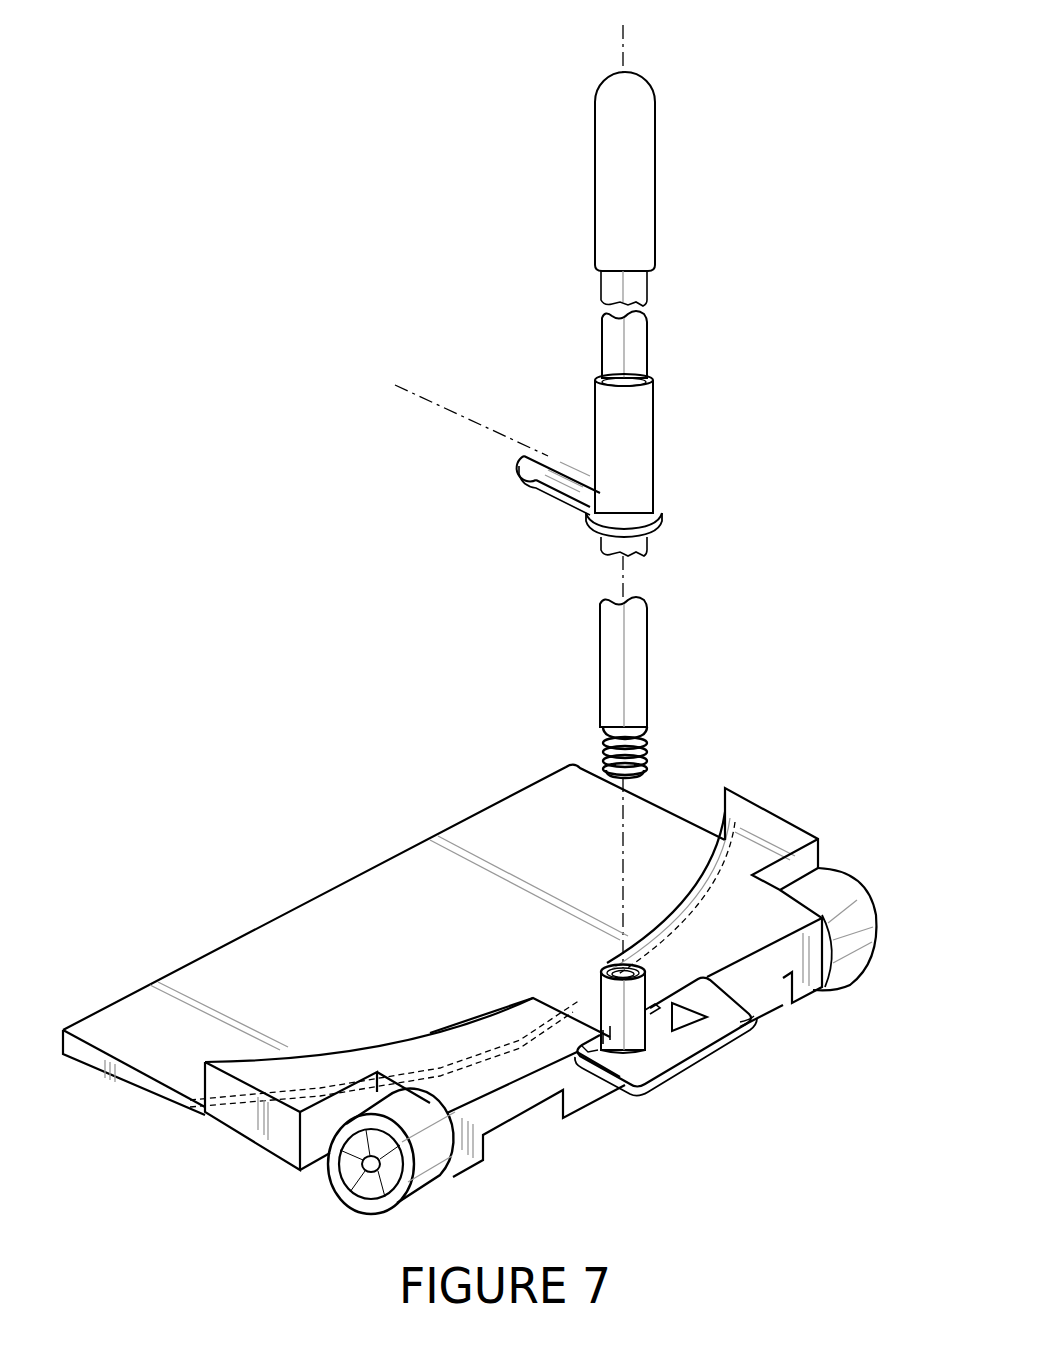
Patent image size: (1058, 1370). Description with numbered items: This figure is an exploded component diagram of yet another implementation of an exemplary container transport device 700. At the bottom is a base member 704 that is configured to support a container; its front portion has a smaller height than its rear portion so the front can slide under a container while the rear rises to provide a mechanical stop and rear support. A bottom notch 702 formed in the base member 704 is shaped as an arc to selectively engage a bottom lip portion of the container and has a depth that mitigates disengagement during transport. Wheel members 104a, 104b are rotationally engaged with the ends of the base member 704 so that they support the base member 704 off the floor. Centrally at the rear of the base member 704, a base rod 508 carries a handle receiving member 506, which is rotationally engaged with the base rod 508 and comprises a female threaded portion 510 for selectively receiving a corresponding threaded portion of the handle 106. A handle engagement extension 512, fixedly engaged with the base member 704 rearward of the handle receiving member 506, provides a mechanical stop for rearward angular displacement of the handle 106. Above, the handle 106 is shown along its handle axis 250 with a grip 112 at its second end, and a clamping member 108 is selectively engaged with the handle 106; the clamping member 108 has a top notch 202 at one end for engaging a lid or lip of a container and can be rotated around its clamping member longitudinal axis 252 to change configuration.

The container transport device 700 is at (682, 70).
The grip 112 is at (640, 190).
The handle 106 is at (638, 352).
The clamping member 108 is at (562, 450).
The clamping member longitudinal axis 252 is at (492, 442).
The top notch 202 is at (535, 495).
The handle axis 250 is at (635, 810).
The base member 704 is at (395, 848).
The bottom notch 702 is at (175, 1115).
The wheel member 104a is at (428, 1192).
The wheel member 104b is at (852, 965).
The threaded portion 510 is at (643, 955).
The handle receiving member 506 is at (717, 1040).
The base rod 508 is at (618, 1067).
The handle engagement extension 512 is at (752, 1024).